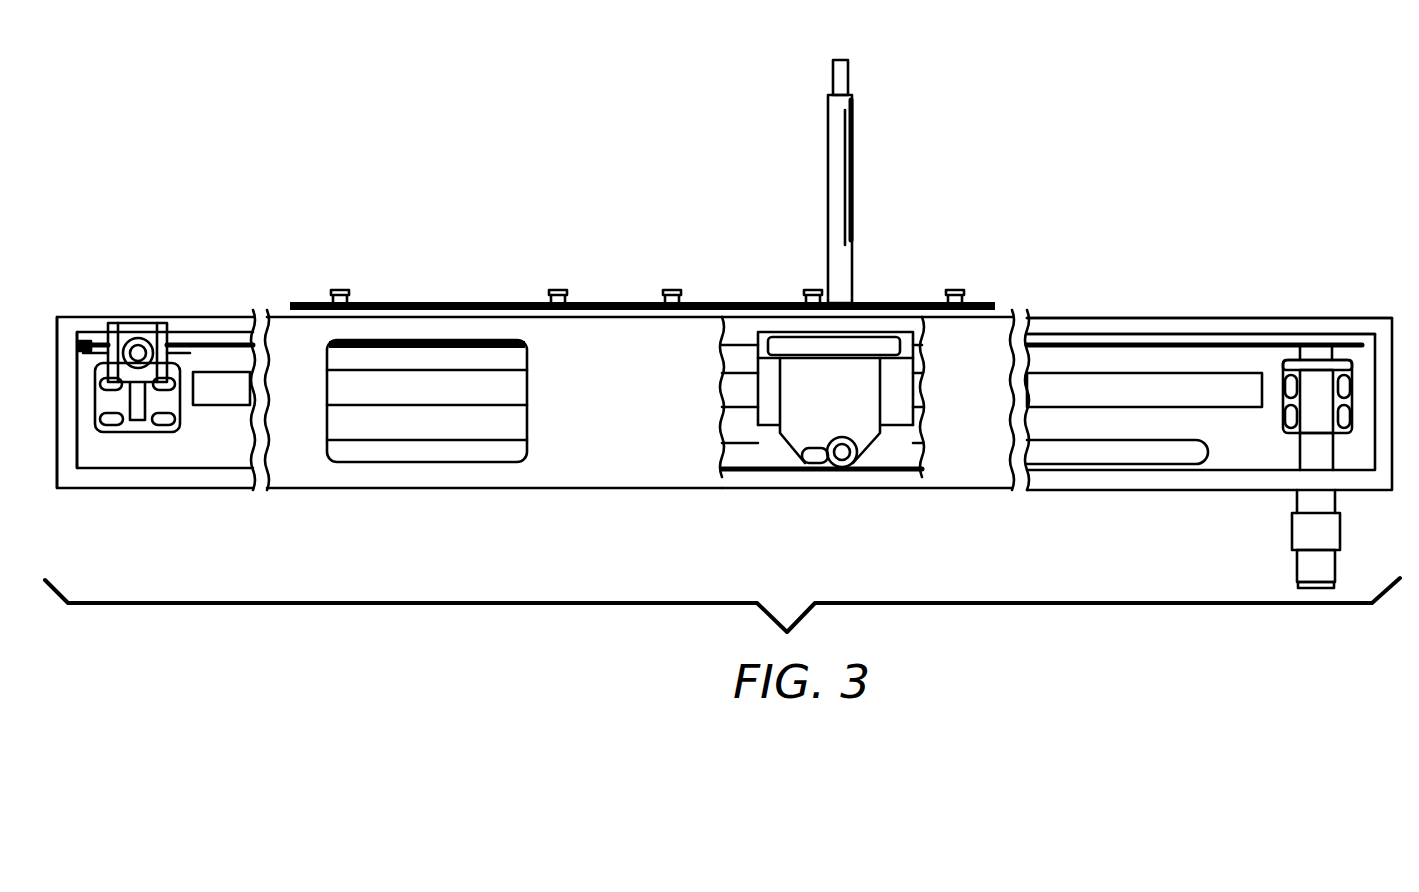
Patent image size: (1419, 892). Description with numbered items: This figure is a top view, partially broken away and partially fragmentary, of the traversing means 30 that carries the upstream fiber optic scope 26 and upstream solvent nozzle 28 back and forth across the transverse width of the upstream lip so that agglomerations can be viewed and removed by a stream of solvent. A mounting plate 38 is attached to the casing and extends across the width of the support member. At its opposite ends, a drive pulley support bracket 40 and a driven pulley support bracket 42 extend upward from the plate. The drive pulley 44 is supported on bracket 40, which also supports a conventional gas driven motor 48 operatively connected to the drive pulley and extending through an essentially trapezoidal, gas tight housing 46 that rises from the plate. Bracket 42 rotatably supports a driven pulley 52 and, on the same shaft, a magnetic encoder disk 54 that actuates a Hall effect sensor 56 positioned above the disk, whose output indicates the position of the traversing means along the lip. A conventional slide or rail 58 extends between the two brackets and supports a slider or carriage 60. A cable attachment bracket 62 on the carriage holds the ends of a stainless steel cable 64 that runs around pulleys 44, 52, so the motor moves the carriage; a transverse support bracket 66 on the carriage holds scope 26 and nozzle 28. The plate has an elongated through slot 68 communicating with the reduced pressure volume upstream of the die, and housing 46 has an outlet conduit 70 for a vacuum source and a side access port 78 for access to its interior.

The upstream fiber optic scope 26 is at (852, 222).
The upstream solvent nozzle 28 is at (855, 80).
The traversing means 30 is at (1268, 363).
The mounting plate 38 is at (1246, 460).
The drive pulley support bracket 40 is at (1350, 378).
The driven pulley support bracket 42 is at (130, 426).
The drive pulley 44 is at (1322, 345).
The gas tight housing 46 is at (1112, 318).
The gas driven motor 48 is at (1338, 535).
The driven pulley 52 is at (96, 340).
The magnetic encoder disk 54 is at (84, 345).
The Hall effect sensor 56 is at (140, 324).
The slide or rail 58 is at (238, 385).
The slider or carriage 60 is at (763, 396).
The cable attachment bracket 62 is at (895, 332).
The stainless steel cable 64 is at (212, 345).
The transverse support bracket 66 is at (835, 378).
The elongated through slot 68 is at (250, 458).
The outlet conduit 70 is at (487, 353).
The side access port 78 is at (540, 302).